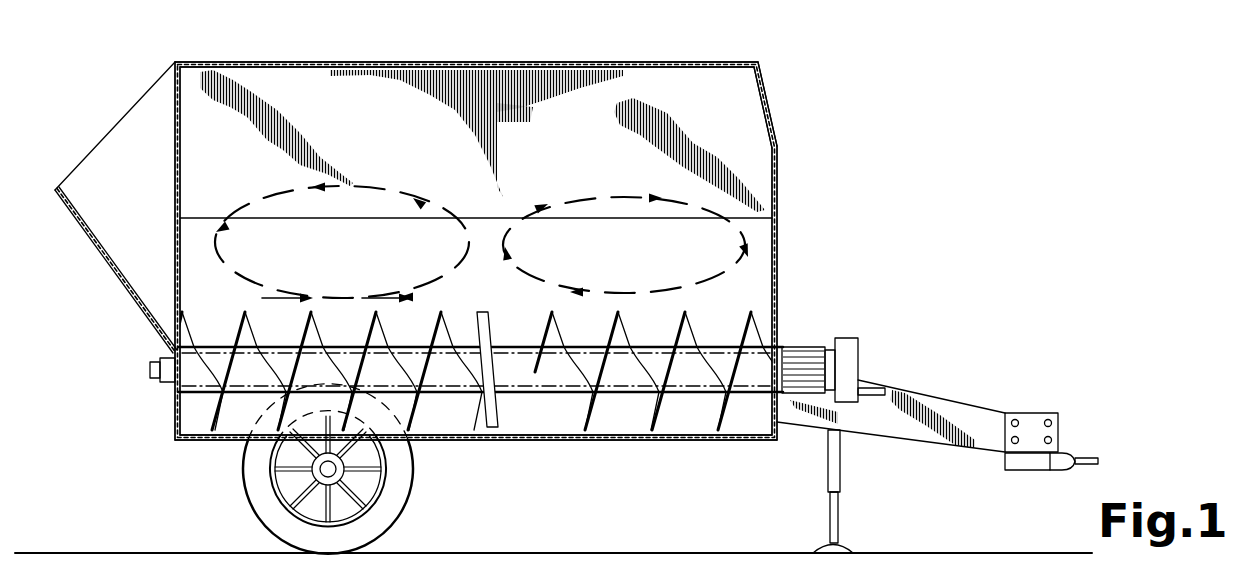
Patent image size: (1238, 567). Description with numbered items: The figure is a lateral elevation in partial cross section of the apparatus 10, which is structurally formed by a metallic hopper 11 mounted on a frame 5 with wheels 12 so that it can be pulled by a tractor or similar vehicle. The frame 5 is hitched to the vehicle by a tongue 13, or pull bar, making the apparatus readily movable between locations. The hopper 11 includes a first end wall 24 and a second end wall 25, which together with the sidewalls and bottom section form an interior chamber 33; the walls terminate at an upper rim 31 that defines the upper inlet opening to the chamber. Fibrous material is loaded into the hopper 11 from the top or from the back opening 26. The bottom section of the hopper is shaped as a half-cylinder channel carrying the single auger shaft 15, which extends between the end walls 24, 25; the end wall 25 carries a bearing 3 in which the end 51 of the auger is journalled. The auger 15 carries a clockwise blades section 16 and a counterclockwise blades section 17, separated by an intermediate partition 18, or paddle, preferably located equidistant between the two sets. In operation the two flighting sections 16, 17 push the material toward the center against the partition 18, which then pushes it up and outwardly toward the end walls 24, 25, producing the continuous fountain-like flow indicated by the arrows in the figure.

The bearing 3 is at (162, 384).
The frame 5 is at (672, 456).
The apparatus 10 is at (483, 271).
The hopper 11 is at (755, 129).
The wheels 12 is at (387, 506).
The tongue 13 is at (976, 415).
The auger shaft 15 is at (528, 397).
The clockwise blades section 16 is at (622, 330).
The counterclockwise blades section 17 is at (372, 330).
The intermediate partition 18 is at (478, 325).
The first end wall 24 is at (778, 292).
The second end wall 25 is at (176, 135).
The back opening 26 is at (173, 279).
The upper rim 31 is at (397, 61).
The interior chamber 33 is at (695, 90).
The end of the auger 51 is at (172, 357).